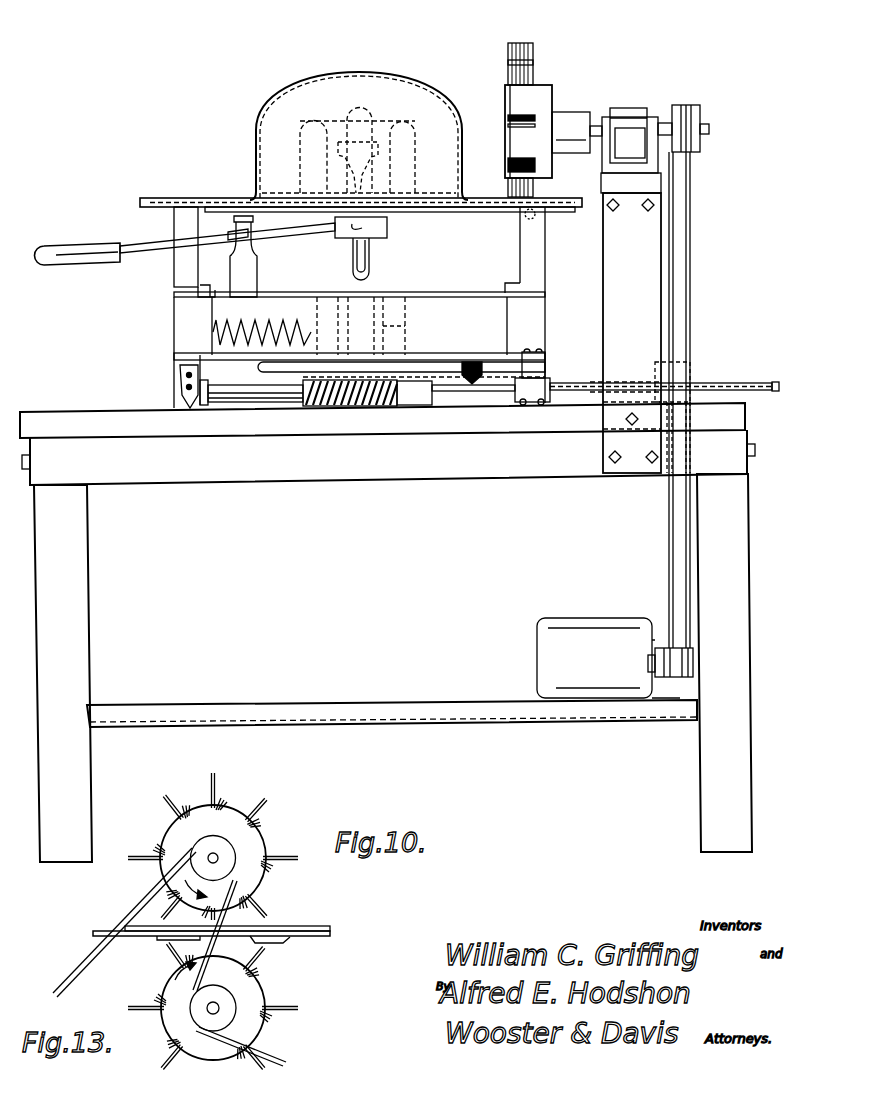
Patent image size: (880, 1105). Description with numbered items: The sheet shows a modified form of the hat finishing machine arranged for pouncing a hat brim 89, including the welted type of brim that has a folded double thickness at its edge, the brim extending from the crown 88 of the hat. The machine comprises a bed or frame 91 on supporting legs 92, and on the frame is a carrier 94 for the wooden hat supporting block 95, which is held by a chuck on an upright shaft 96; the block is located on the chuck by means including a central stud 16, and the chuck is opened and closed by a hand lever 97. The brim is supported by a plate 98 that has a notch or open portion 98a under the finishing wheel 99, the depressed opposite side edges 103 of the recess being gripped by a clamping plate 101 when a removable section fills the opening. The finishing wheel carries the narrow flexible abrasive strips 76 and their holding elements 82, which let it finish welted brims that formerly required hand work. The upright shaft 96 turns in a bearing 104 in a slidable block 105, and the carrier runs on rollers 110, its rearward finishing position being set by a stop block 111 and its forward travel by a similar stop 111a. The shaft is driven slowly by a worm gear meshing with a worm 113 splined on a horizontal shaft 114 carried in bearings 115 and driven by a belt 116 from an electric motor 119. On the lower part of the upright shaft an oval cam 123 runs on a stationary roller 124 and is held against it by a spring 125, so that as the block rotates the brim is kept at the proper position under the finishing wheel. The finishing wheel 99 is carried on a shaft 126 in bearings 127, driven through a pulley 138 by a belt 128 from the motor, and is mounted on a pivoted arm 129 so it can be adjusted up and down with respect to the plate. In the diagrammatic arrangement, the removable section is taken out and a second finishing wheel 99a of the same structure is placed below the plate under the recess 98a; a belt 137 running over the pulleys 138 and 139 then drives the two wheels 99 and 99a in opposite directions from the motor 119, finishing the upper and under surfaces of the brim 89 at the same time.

In FIG. 10, the central stud 16 is at (380, 152).
In FIG. 10, the brush 76 is at (538, 52).
In FIG. 13, the brush 76 is at (218, 782).
In FIG. 10, the brush sleeve 82 is at (528, 110).
In FIG. 13, the brush sleeve 82 is at (172, 808).
In FIG. 10, the crown 88 is at (430, 88).
In FIG. 10, the brim 89 is at (237, 199).
In FIG. 13, the brim 89 is at (292, 929).
In FIG. 10, the bed or frame 91 is at (158, 478).
In FIG. 10, the supporting legs 92 is at (88, 642).
In FIG. 10, the carrier 94 is at (158, 352).
In FIG. 10, the wooden hat supporting block 95 is at (378, 71).
In FIG. 10, the upright shaft 96 is at (375, 276).
In FIG. 10, the hand lever 97 is at (142, 252).
In FIG. 10, the plate 98 is at (410, 207).
In FIG. 13, the plate 98 is at (330, 930).
In FIG. 13, the notch or open portion 98a is at (272, 945).
In FIG. 10, the finishing wheel 99 is at (542, 72).
In FIG. 13, the finishing wheel 99 is at (283, 812).
In FIG. 13, the second finishing wheel 99a is at (305, 1005).
In FIG. 10, the clamping plate 101 is at (560, 215).
In FIG. 13, the depressed opposite side edges 103 is at (160, 938).
In FIG. 10, the bearing 104 is at (410, 323).
In FIG. 10, the slidable block 105 is at (408, 340).
In FIG. 10, the rollers 110 is at (178, 405).
In FIG. 10, the stop block 111 is at (556, 400).
In FIG. 10, the stop 111a is at (410, 403).
In FIG. 10, the worm 113 is at (350, 405).
In FIG. 10, the horizontal shaft 114 is at (232, 400).
In FIG. 10, the bearings 115 is at (204, 388).
In FIG. 10, the belt 116 is at (668, 549).
In FIG. 10, the electric motor 119 is at (583, 628).
In FIG. 10, the cam 123 is at (287, 385).
In FIG. 10, the stationary roller 124 is at (480, 358).
In FIG. 10, the spring 125 is at (275, 305).
In FIG. 10, the shaft 126 is at (596, 125).
In FIG. 10, the bearings 127 is at (632, 108).
In FIG. 10, the belt 128 is at (688, 575).
In FIG. 10, the arm 129 is at (662, 150).
In FIG. 13, the belt 137 is at (145, 922).
In FIG. 10, the pulley 138 is at (688, 105).
In FIG. 13, the pulley 138 is at (230, 850).
In FIG. 13, the pulley 139 is at (259, 1034).